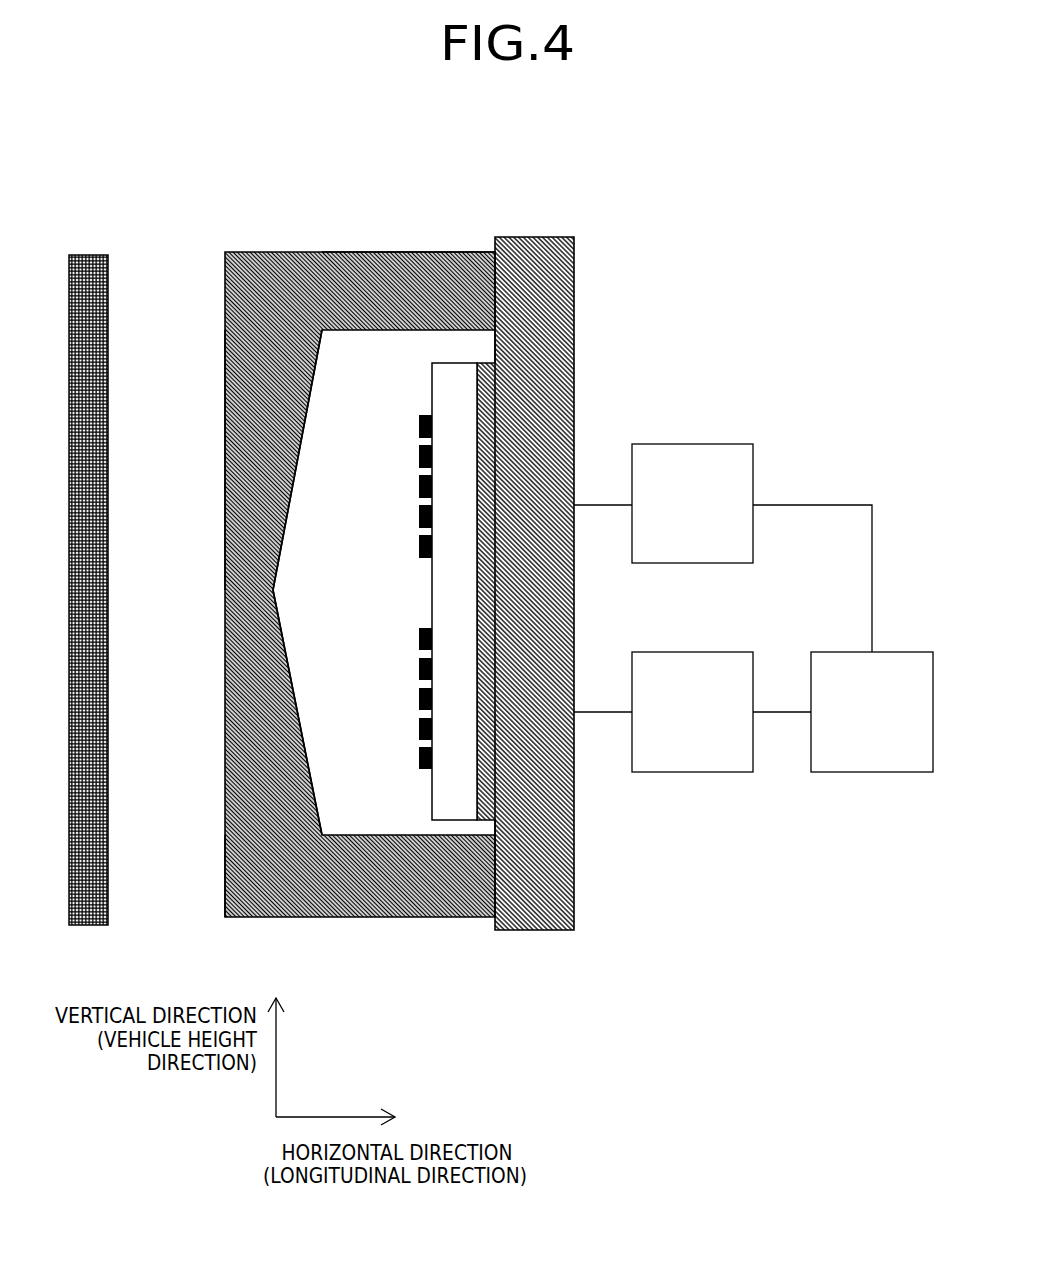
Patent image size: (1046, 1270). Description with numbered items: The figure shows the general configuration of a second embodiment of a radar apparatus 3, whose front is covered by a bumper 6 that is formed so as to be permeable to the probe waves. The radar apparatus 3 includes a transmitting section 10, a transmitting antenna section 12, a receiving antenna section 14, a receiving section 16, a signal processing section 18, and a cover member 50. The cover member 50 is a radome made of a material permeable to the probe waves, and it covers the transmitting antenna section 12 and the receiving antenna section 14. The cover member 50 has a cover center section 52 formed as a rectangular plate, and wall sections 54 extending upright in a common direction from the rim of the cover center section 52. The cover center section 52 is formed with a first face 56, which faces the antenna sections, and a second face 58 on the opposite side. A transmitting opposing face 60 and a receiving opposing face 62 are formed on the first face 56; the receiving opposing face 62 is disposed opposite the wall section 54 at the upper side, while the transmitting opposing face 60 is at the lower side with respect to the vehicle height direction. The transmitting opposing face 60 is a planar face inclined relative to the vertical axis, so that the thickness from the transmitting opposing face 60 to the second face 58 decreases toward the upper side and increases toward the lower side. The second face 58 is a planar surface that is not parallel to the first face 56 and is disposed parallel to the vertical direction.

The radar apparatus 3 is at (577, 183).
The bumper 6 is at (95, 257).
The transmitting section 10 is at (719, 652).
The transmitting antenna section 12 is at (394, 732).
The receiving antenna section 14 is at (412, 451).
The receiving section 16 is at (722, 444).
The signal processing section 18 is at (904, 652).
The cover member 50 is at (277, 210).
The cover center section 52 is at (222, 806).
The wall section 54 is at (353, 252).
The first face 56 is at (362, 478).
The second face 58 is at (213, 352).
The transmitting opposing face 60 is at (308, 736).
The receiving opposing face 62 is at (316, 434).